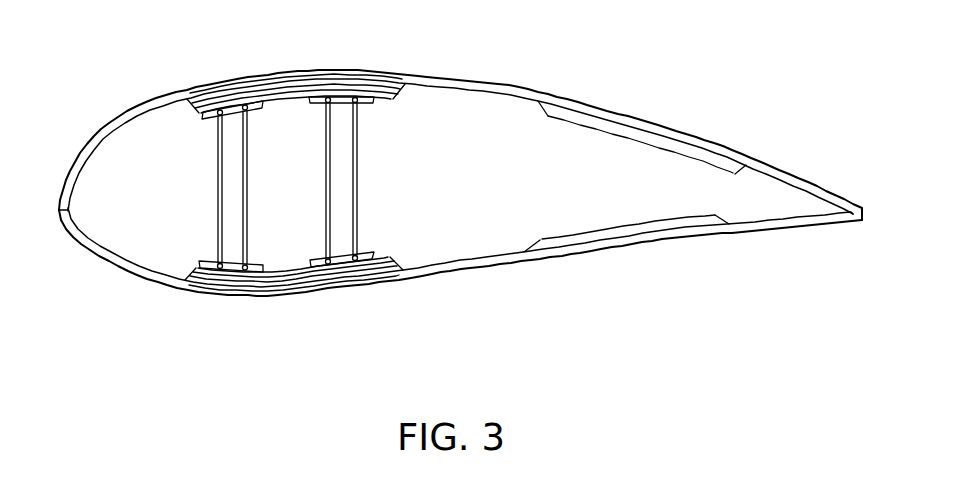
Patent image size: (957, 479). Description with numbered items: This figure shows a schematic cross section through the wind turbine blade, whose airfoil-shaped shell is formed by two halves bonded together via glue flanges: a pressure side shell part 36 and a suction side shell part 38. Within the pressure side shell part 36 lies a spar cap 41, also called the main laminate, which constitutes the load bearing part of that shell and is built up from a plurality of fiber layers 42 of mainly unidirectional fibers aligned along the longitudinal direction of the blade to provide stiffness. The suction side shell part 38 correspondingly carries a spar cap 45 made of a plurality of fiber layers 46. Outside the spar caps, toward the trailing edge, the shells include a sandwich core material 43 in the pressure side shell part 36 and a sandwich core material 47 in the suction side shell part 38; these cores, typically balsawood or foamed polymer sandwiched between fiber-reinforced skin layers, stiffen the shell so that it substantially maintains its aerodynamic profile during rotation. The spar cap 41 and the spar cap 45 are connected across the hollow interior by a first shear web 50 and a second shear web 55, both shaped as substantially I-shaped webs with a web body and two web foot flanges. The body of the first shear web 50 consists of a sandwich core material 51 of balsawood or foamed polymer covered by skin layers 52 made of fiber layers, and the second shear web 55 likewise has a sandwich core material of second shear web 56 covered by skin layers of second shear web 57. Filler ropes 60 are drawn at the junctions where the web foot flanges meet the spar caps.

The pressure side shell part 36 is at (500, 270).
The suction side shell part 38 is at (489, 76).
The spar cap 41 is at (372, 288).
The fiber layers 42 is at (304, 294).
The sandwich core material 43 is at (627, 237).
The spar cap 45 is at (227, 80).
The fiber layers 46 is at (351, 70).
The sandwich core material 47 is at (656, 133).
The first shear web 50 is at (260, 146).
The sandwich core material 51 is at (248, 197).
The skin layers 52 is at (258, 98).
The second shear web 55 is at (385, 182).
The sandwich core material of second shear web 56 is at (357, 222).
The skin layers of second shear web 57 is at (358, 139).
The filler ropes 60 is at (327, 100).